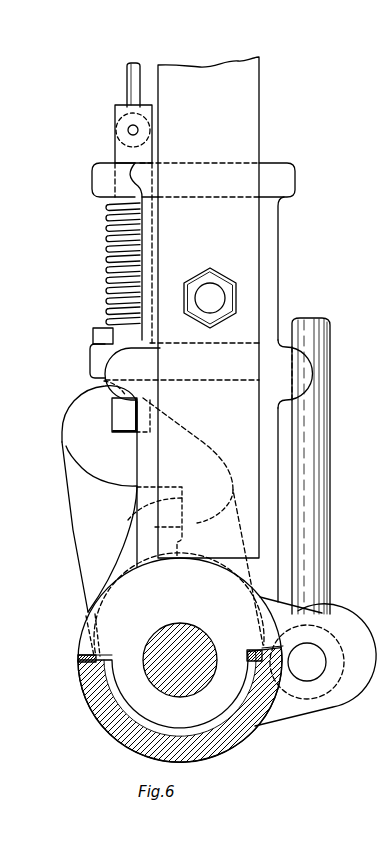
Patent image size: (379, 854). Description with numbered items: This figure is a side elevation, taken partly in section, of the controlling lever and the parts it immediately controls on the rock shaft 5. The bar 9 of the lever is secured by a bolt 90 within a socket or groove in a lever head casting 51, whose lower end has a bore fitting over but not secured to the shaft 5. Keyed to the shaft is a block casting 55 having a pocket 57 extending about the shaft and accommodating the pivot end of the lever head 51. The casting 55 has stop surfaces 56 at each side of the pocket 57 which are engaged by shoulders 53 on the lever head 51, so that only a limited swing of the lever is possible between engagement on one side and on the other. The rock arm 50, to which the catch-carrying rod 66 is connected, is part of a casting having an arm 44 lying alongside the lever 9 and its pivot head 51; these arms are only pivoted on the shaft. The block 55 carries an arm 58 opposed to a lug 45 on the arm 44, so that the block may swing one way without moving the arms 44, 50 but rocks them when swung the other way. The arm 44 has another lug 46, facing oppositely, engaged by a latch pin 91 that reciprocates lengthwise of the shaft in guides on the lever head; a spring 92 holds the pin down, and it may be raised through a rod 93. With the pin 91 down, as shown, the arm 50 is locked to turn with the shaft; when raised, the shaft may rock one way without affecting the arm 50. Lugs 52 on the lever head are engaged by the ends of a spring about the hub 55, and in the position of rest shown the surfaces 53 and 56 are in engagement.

The rock shaft 5 is at (178, 628).
The lever bar 9 is at (208, 307).
The arm 44 is at (82, 527).
The lug 45 is at (188, 522).
The lug 46 is at (110, 412).
The rock arm 50 is at (326, 707).
The lever head casting 51 is at (276, 301).
The lugs 52 is at (268, 368).
The shoulders 53 is at (88, 655).
The block casting 55 is at (248, 738).
The stop surfaces 56 is at (82, 662).
The pocket 57 is at (148, 736).
The arm 58 is at (164, 527).
The rod 66 is at (305, 519).
The bolt 90 is at (210, 296).
The latch pin 91 is at (122, 421).
The spring 92 is at (107, 257).
The rod 93 is at (126, 85).